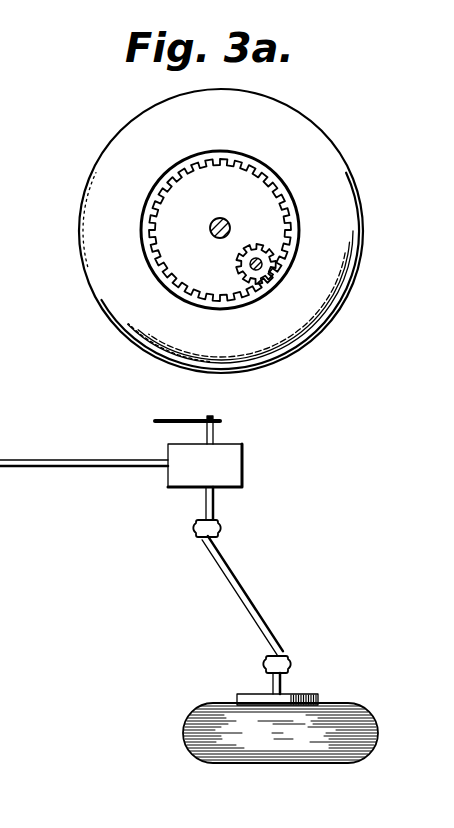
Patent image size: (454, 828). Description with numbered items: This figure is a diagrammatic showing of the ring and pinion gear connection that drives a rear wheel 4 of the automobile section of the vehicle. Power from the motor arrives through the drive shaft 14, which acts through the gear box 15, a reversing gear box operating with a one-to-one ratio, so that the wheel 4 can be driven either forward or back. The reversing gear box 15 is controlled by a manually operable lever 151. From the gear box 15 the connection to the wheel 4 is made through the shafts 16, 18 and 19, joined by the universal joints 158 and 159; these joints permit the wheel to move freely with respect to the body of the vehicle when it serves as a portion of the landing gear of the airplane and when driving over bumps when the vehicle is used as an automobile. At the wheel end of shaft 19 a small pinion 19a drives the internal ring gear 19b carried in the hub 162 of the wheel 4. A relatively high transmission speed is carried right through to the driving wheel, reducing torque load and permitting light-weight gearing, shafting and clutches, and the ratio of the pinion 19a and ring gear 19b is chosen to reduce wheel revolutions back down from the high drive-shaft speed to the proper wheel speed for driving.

The rear wheel 4 is at (115, 293).
The drive shaft 14 is at (48, 435).
The gear box 15 is at (286, 469).
The manually operable lever 151 is at (187, 421).
The shaft 16 is at (215, 505).
The universal joint 158 is at (222, 532).
The shaft 18 is at (255, 606).
The universal joint 159 is at (287, 657).
The shaft 19 is at (282, 688).
The pinion 19a is at (273, 262).
The ring gear 19b is at (283, 188).
The hub 162 is at (295, 237).